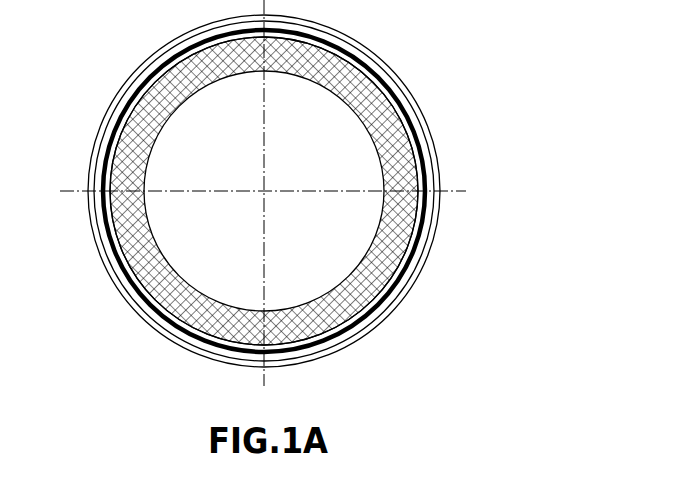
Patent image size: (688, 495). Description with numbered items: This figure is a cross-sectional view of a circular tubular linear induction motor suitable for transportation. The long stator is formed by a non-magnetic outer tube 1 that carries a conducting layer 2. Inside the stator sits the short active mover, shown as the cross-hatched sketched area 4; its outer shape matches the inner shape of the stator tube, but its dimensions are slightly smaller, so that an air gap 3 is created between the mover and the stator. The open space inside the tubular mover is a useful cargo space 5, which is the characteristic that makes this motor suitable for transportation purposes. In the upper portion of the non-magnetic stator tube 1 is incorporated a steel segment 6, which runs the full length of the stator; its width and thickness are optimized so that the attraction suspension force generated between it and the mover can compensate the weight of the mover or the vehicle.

The non-magnetic outer tube 1 is at (419, 112).
The conducting layer 2 is at (425, 162).
The air gap 3 is at (416, 208).
The active mover 4 is at (402, 248).
The cargo space 5 is at (311, 293).
The steel segment 6 is at (348, 62).